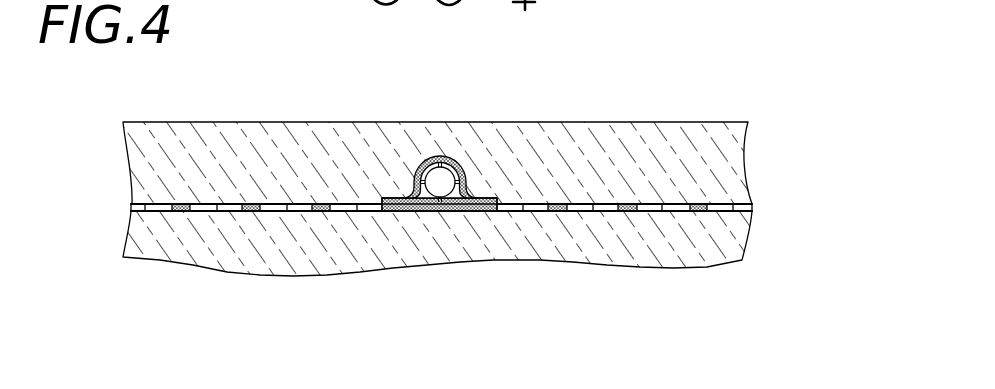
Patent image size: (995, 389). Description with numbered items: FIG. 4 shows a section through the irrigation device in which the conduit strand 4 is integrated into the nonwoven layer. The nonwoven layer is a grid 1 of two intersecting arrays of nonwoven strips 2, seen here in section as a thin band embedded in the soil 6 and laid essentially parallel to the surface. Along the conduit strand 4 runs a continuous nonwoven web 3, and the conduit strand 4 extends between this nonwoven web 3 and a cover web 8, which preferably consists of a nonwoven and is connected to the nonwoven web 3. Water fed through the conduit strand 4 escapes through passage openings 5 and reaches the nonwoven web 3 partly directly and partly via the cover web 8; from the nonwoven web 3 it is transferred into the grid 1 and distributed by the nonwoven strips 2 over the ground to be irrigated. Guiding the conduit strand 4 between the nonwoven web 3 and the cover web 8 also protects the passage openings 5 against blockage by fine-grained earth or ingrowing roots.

The grid 1 is at (605, 200).
The nonwoven strips 2 is at (218, 204).
The nonwoven web 3 is at (470, 212).
The conduit strand 4 is at (436, 172).
The passage openings 5 is at (462, 175).
The soil 6 is at (212, 238).
The cover web 8 is at (456, 164).